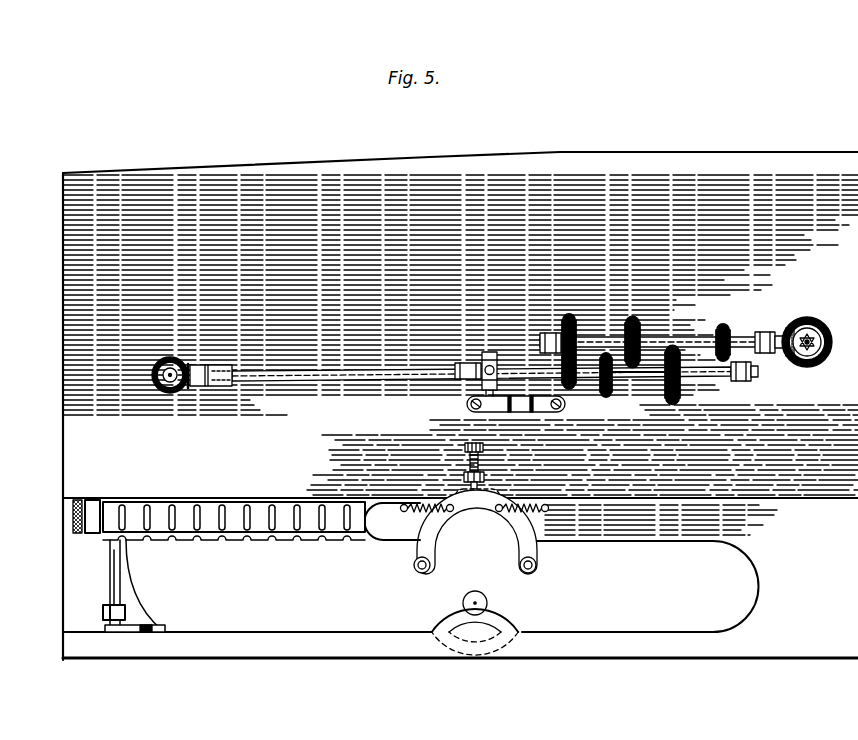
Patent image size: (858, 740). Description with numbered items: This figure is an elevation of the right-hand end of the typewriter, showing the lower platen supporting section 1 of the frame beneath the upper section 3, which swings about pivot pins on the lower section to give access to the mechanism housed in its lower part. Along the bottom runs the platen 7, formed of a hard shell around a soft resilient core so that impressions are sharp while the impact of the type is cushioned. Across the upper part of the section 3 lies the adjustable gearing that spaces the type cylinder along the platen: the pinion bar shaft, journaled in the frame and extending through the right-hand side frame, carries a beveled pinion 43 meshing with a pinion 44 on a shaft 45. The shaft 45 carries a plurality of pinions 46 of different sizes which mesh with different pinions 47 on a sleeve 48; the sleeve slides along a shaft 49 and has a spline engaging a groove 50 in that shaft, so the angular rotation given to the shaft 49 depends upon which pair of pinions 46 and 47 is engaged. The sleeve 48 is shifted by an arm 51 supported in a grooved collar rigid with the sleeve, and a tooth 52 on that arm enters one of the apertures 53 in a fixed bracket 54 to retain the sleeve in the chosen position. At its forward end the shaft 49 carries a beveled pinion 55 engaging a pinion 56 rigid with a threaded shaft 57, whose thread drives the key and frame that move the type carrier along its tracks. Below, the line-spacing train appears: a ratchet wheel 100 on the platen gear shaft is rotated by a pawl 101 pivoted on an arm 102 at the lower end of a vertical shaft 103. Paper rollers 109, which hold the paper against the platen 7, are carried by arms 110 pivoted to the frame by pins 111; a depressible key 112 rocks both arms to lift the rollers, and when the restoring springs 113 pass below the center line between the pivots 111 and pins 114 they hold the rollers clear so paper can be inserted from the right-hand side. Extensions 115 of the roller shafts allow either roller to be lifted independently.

The lower platen supporting section 1 is at (805, 660).
The upper section of the frame 3 is at (660, 162).
The platen 7 is at (522, 609).
The beveled pinion 43 is at (818, 322).
The pinion 44 is at (790, 356).
The shaft 45 is at (688, 337).
The pinions 46 is at (572, 320).
The pinions 47 is at (570, 384).
The sleeve 48 is at (642, 398).
The shaft 49 is at (400, 373).
The groove 50 is at (712, 380).
The arm 51 is at (490, 352).
The tooth 52 is at (471, 402).
The apertures 53 is at (500, 412).
The fixed bracket 54 is at (553, 412).
The beveled pinion 55 is at (202, 364).
The pinion 56 is at (152, 372).
The threaded shaft 57 is at (178, 362).
The ratchet wheel 100 is at (160, 628).
The pawl 101 is at (138, 622).
The arm 102 is at (122, 632).
The vertical shaft 103 is at (108, 592).
The paper rollers 109 is at (413, 568).
The arms 110 is at (436, 532).
The pins 111 is at (518, 497).
The depressible key 112 is at (465, 447).
The restoring springs 113 is at (432, 497).
The pins 114 is at (405, 511).
The extensions 115 is at (418, 574).